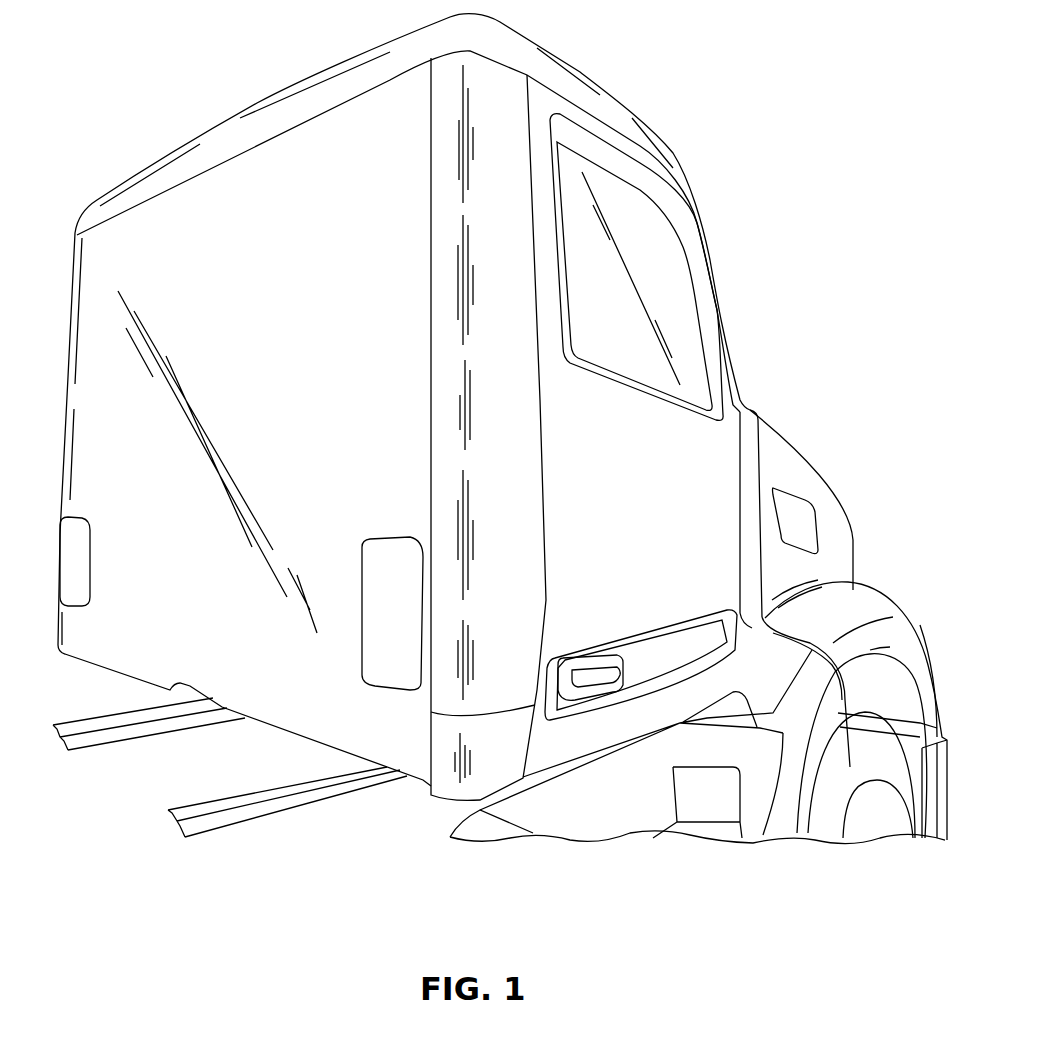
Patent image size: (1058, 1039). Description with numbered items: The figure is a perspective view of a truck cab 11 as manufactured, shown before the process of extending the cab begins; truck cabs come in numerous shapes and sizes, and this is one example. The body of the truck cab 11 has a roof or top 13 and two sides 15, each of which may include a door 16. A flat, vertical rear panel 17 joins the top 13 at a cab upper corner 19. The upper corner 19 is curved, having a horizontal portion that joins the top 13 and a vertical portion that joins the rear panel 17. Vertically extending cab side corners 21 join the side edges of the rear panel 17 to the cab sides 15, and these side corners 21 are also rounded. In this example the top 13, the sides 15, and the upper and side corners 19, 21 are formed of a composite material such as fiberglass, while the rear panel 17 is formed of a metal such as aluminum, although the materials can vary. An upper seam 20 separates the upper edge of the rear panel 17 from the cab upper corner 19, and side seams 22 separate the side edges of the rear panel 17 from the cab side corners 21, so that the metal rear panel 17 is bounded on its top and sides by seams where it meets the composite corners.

The truck cab 11 is at (752, 331).
The top 13 is at (562, 62).
The sides 15 is at (518, 263).
The door 16 is at (657, 533).
The rear panel 17 is at (190, 556).
The cab upper corner 19 is at (267, 117).
The upper seam 20 is at (288, 136).
The cab side corners 21 is at (467, 358).
The side seams 22 is at (430, 240).